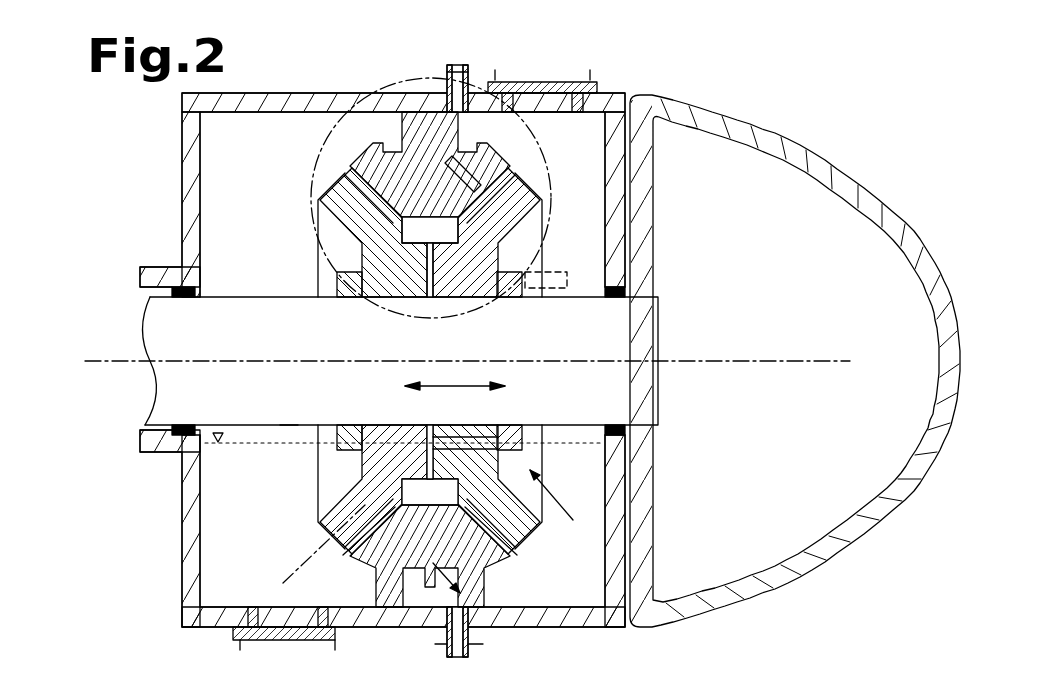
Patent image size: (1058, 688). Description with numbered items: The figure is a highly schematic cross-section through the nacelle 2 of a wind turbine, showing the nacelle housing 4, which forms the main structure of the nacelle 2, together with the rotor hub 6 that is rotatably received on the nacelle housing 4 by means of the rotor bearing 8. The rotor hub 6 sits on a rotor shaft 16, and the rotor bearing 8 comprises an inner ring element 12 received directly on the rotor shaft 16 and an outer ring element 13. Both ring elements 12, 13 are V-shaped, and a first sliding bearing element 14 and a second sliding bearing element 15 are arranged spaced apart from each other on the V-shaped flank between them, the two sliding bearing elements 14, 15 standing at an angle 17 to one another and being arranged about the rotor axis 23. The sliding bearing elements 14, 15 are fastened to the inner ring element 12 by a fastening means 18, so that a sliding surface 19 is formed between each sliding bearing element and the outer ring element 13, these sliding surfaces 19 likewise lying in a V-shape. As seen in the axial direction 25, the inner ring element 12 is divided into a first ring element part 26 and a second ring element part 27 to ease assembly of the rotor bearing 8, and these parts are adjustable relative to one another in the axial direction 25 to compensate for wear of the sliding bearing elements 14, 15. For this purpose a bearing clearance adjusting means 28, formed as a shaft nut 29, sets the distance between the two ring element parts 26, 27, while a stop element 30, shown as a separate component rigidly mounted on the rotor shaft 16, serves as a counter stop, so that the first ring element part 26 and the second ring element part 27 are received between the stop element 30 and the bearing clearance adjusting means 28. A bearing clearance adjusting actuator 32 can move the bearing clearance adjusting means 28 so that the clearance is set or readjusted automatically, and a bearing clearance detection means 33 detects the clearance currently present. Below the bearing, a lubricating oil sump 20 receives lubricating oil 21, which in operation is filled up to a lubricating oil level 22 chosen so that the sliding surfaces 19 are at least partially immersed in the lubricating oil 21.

The nacelle 2 is at (788, 77).
The nacelle housing 4 is at (188, 592).
The rotor hub 6 is at (810, 556).
The rotor bearing 8 is at (302, 487).
The inner ring element 12 is at (388, 440).
The outer ring element 13 is at (380, 530).
The first sliding bearing element 14 is at (363, 457).
The second sliding bearing element 15 is at (560, 530).
The rotor shaft 16 is at (155, 352).
The angle 17 is at (420, 520).
The fastening means 18 is at (226, 640).
The sliding surface 19 is at (386, 510).
The lubricating oil sump 20 is at (289, 428).
The lubricating oil 21 is at (228, 522).
The lubricating oil level 22 is at (269, 431).
The rotor axis 23 is at (840, 358).
The axial direction 25 is at (572, 127).
The first ring element part 26 is at (380, 252).
The second ring element part 27 is at (533, 264).
The bearing clearance adjusting means 28 is at (577, 460).
The shaft nut 29 is at (522, 446).
The stop element 30 is at (362, 262).
The bearing clearance adjusting actuator 32 is at (500, 273).
The bearing clearance detection means 33 is at (452, 160).